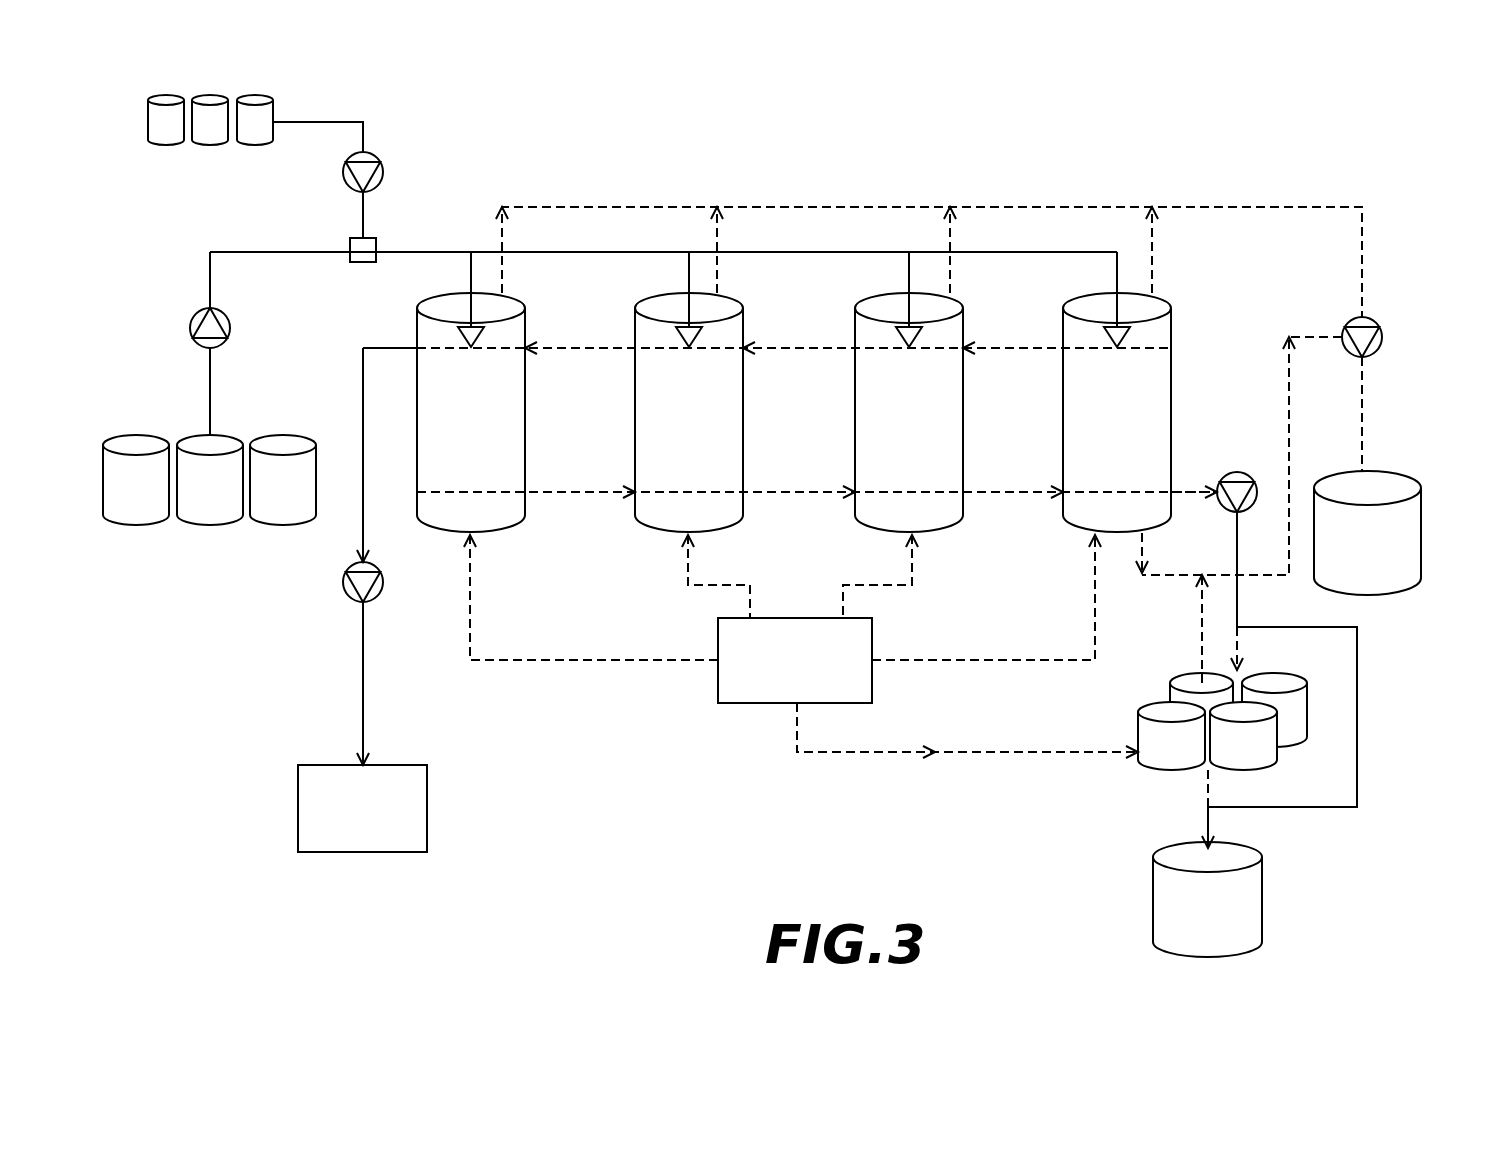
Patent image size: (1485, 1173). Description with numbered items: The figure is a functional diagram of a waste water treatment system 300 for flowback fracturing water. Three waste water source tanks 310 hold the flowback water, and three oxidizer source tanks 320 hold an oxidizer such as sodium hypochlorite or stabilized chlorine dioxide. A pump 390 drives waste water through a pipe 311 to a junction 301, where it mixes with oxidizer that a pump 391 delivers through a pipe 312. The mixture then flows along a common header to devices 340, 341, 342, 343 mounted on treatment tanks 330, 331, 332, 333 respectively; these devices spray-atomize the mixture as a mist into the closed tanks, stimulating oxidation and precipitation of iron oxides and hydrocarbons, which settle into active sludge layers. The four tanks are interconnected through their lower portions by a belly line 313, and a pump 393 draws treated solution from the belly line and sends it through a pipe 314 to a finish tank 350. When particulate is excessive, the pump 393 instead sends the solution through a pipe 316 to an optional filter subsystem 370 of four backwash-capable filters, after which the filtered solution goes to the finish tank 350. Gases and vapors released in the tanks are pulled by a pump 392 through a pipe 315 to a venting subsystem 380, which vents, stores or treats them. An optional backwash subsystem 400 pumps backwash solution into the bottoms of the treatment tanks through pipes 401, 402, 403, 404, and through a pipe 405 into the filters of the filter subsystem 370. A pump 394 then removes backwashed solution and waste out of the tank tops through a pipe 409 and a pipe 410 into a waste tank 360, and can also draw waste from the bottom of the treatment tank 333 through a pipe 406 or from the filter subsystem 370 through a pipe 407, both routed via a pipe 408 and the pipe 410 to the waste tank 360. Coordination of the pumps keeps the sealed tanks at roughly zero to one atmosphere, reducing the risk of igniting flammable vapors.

The system 300 is at (907, 141).
The junction 301 is at (350, 240).
The waste water source tanks 310 is at (215, 555).
The pipe 311 is at (210, 398).
The pipe 312 is at (363, 134).
The belly line 313 is at (1190, 496).
The pipe 314 is at (1357, 705).
The pipe 315 is at (360, 405).
The pipe 316 is at (1240, 650).
The oxidizer source tanks 320 is at (208, 165).
The treatment tank 330 is at (525, 427).
The treatment tank 331 is at (743, 418).
The treatment tank 332 is at (963, 418).
The treatment tank 333 is at (1171, 323).
The spray-atomizing device 340 is at (458, 340).
The spray-atomizing device 341 is at (676, 340).
The spray-atomizing device 342 is at (896, 340).
The spray-atomizing device 343 is at (1104, 340).
The finish tank 350 is at (1262, 862).
The waste tank 360 is at (1370, 593).
The filter subsystem 370 is at (1150, 787).
The venting subsystem 380 is at (428, 808).
The pump 390 is at (192, 322).
The pump 391 is at (384, 175).
The pump 392 is at (350, 598).
The pump 393 is at (1240, 472).
The pump 394 is at (1346, 323).
The backwash subsystem 400 is at (718, 700).
The pipe 401 is at (553, 662).
The pipe 402 is at (688, 590).
The pipe 403 is at (920, 588).
The pipe 404 is at (1037, 657).
The pipe 405 is at (1000, 748).
The pipe 406 is at (1137, 560).
The pipe 407 is at (1198, 655).
The pipe 408 is at (1289, 390).
The pipe 409 is at (1235, 207).
The pipe 410 is at (1366, 418).